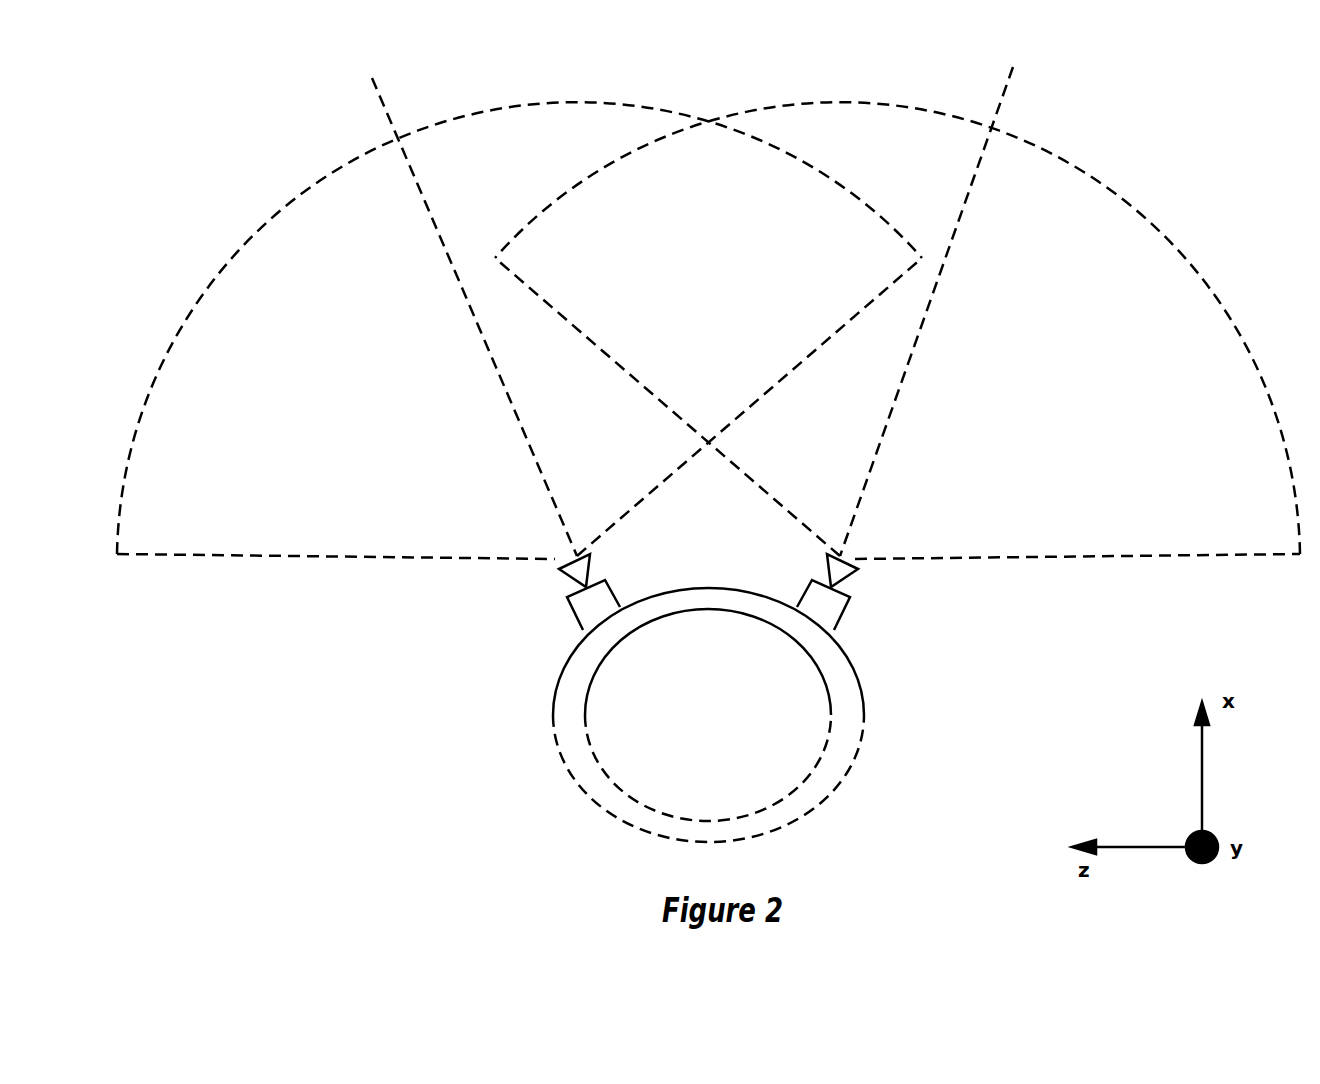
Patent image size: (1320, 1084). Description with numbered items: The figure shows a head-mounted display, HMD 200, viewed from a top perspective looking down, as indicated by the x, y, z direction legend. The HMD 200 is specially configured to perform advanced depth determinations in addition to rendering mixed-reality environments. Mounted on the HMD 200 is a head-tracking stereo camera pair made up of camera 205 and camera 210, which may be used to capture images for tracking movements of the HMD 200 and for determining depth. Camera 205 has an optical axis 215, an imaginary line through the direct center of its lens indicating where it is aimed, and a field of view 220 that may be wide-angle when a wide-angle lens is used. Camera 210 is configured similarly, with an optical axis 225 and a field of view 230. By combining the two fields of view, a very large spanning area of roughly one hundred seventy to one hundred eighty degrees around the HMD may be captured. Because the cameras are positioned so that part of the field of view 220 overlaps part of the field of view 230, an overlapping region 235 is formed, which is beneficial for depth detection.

The HMD 200 is at (553, 718).
The camera 205 is at (572, 612).
The camera 210 is at (845, 612).
The optical axis 215 is at (380, 97).
The field of view 220 is at (178, 332).
The optical axis 225 is at (1005, 90).
The field of view 230 is at (1185, 257).
The overlapping region 235 is at (723, 294).